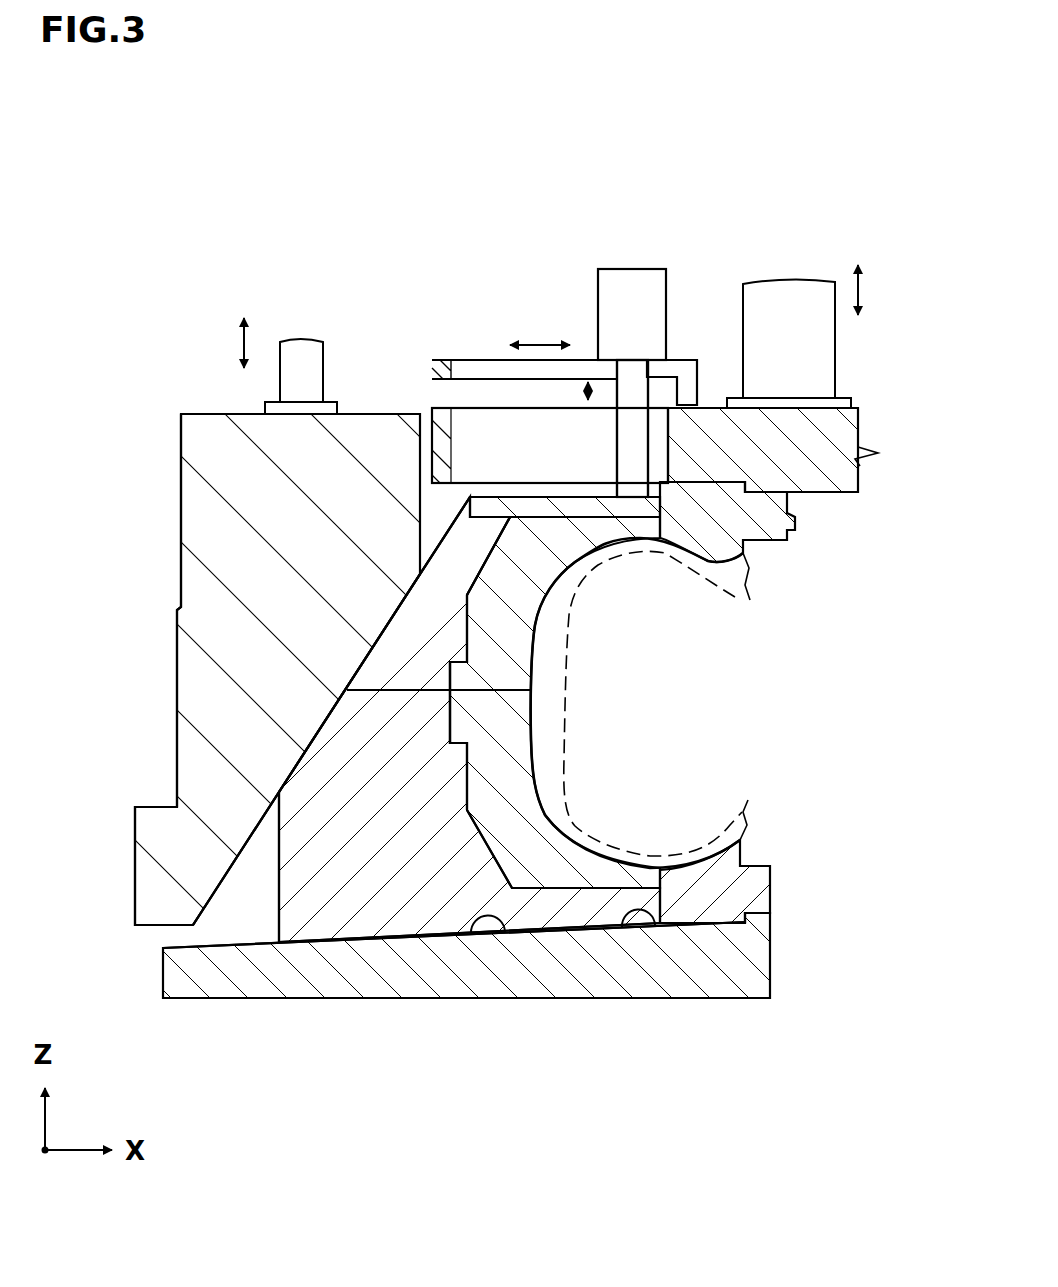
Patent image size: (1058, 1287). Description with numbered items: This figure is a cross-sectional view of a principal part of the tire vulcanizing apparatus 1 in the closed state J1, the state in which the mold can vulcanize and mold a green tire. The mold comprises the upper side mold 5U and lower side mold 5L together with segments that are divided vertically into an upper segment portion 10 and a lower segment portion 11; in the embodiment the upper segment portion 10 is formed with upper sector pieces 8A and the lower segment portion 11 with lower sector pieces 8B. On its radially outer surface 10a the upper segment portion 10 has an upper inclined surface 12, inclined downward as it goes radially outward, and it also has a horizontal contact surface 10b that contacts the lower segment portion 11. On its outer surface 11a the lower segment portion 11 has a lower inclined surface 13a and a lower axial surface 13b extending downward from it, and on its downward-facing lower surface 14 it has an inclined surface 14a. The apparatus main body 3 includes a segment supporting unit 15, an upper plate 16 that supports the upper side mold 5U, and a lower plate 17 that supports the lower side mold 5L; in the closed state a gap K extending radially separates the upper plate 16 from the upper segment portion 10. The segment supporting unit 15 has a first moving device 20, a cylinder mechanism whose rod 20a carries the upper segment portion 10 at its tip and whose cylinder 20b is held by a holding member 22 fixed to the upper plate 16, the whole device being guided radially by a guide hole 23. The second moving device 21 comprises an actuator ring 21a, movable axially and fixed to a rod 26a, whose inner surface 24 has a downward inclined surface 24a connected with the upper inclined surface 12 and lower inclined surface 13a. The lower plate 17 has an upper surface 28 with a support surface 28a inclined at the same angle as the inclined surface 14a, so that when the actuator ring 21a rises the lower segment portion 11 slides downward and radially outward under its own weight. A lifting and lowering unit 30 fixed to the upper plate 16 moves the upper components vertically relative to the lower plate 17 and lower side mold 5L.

The tire vulcanizing apparatus 1 is at (162, 210).
The apparatus main body 3 is at (150, 460).
The upper side mold 5U is at (755, 523).
The lower side mold 5L is at (742, 888).
The upper sector piece 8A is at (403, 642).
The lower sector piece 8B is at (353, 903).
The upper segment portion 10 is at (485, 535).
The outer surface 10a is at (400, 637).
The contact surface 10b is at (490, 703).
The lower segment portion 11 is at (443, 890).
The outer surface 11a is at (96, 660).
The upper inclined surface 12 is at (393, 608).
The lower inclined surface 13a is at (330, 708).
The lower axial surface 13b is at (277, 837).
The lower surface 14 is at (547, 930).
The inclined surface 14a is at (585, 927).
The segment supporting unit 15 is at (619, 250).
The upper plate 16 is at (835, 432).
The lower plate 17 is at (728, 962).
The first moving device 20 is at (675, 214).
The rod 20a is at (633, 395).
The cylinder 20b is at (638, 312).
The second moving device 21 is at (207, 400).
The actuator ring 21a is at (277, 508).
The holding member 22 is at (460, 463).
The guide hole 23 is at (483, 372).
The inner surface 24 is at (230, 885).
The downward inclined surface 24a is at (320, 723).
The rod 26a is at (302, 370).
The upper surface 28 is at (470, 935).
The support surface 28a is at (640, 913).
The lifting and lowering unit 30 is at (842, 360).
The gap K is at (538, 490).
The closed state J1 is at (888, 1051).